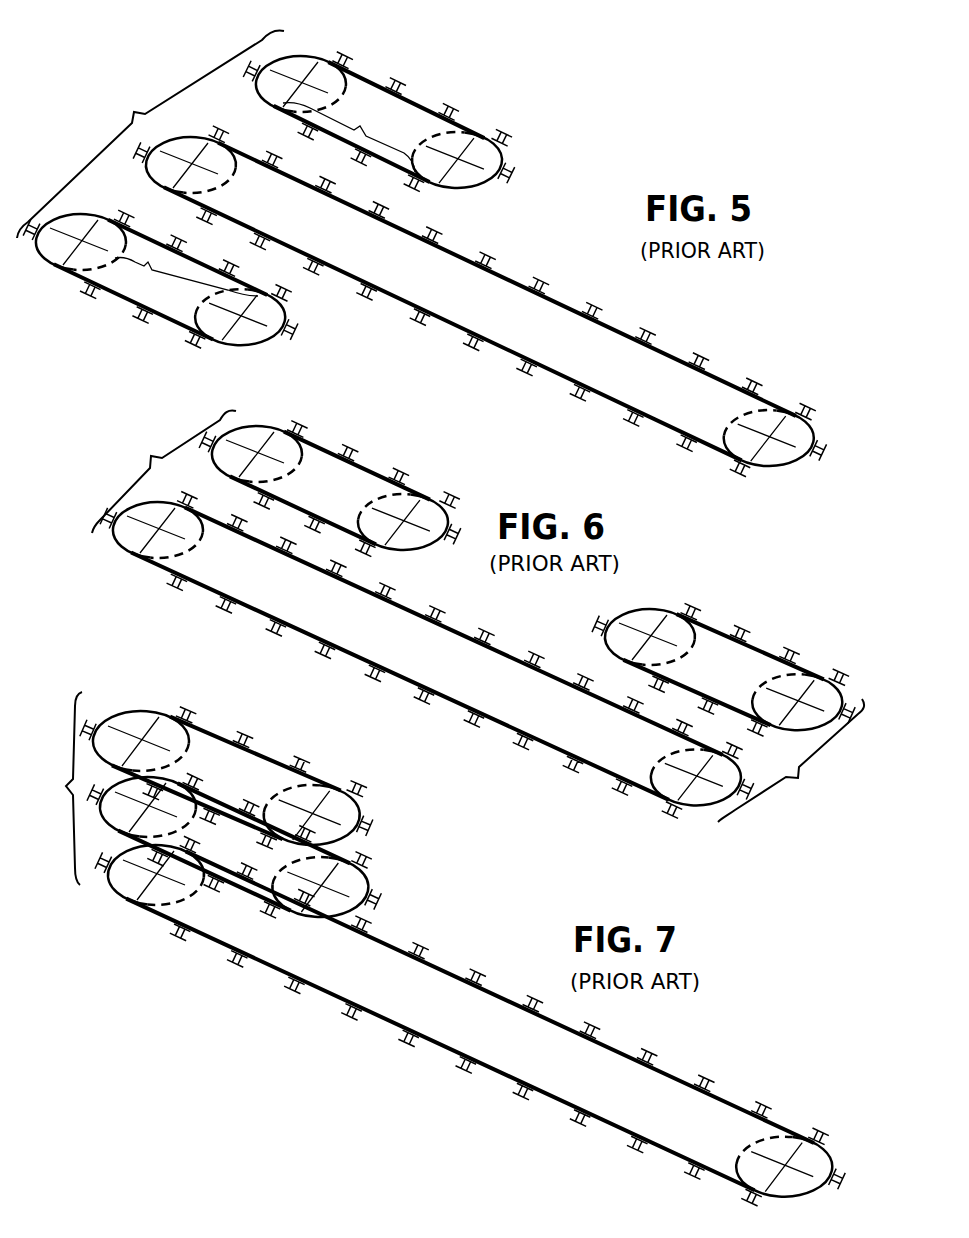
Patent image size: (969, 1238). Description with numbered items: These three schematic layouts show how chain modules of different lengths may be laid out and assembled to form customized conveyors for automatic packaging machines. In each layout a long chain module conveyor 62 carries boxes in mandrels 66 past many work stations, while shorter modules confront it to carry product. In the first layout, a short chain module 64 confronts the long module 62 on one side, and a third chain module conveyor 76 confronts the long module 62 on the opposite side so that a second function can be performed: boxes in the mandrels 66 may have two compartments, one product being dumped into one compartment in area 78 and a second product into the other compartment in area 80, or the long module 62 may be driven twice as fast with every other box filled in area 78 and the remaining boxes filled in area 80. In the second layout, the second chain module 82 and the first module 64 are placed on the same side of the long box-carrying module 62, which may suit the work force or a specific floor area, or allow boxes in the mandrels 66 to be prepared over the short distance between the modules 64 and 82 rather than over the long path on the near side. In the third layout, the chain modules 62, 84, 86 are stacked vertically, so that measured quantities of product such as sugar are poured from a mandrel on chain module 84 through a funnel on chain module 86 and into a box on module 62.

In FIG. 6, the long chain module conveyor 62 is at (453, 629).
In FIG. 7, the long chain module conveyor 62 is at (443, 958).
In FIG. 5, the chain module 64 is at (421, 100).
In FIG. 6, the chain module 64 is at (374, 467).
In FIG. 5, the mandrels 66 is at (592, 306).
In FIG. 6, the mandrels 66 is at (567, 765).
In FIG. 5, the third chain module conveyor 76 is at (125, 312).
In FIG. 5, the area 78 is at (186, 279).
In FIG. 5, the area 80 is at (349, 135).
In FIG. 6, the second chain module 82 is at (766, 646).
In FIG. 7, the chain module 84 is at (267, 756).
In FIG. 7, the chain module 86 is at (372, 887).